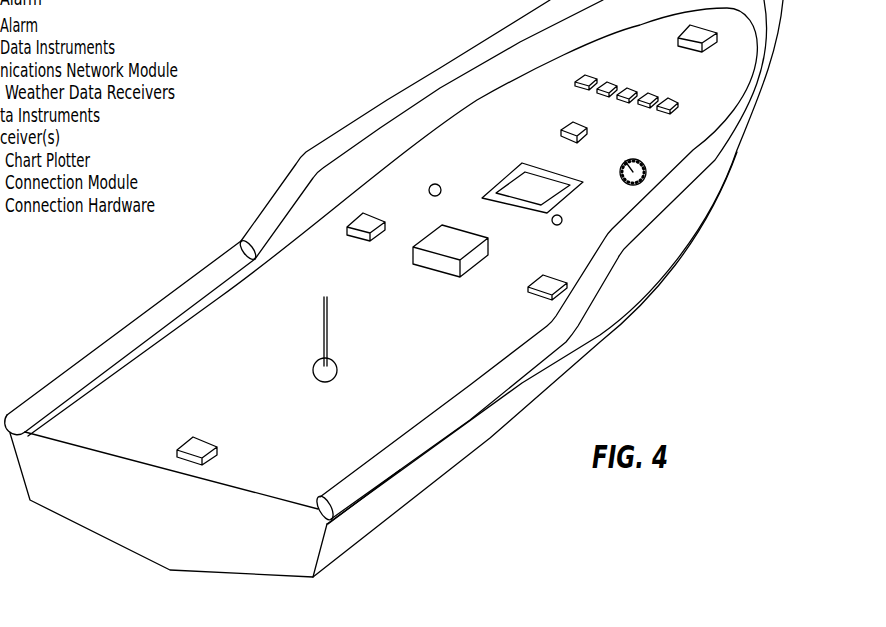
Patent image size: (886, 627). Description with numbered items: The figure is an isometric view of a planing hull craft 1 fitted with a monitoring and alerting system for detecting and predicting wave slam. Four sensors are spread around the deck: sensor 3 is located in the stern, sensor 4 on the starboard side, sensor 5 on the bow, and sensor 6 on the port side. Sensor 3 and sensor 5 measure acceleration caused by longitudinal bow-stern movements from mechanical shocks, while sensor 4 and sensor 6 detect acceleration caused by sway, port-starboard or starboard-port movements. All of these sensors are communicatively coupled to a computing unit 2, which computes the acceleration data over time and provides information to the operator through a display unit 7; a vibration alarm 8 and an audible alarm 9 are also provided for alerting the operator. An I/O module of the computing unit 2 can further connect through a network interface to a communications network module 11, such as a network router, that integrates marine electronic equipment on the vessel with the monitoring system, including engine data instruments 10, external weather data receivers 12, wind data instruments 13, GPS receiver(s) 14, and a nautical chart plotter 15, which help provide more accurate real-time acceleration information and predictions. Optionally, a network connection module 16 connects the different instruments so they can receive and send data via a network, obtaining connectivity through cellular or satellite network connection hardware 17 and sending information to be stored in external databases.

The planing hull craft 1 is at (685, 263).
The computing unit 2 is at (488, 247).
The sensor 3 is at (217, 447).
The sensor 4 is at (528, 290).
The sensor 5 is at (678, 42).
The sensor 6 is at (383, 217).
The display unit 7 is at (573, 175).
The vibration alarm 8 is at (439, 184).
The audible alarm 9 is at (561, 224).
The engine data instruments 10 is at (647, 165).
The communications network module 11 is at (561, 134).
The external weather data receivers 12 is at (575, 85).
The wind data instruments 13 is at (598, 96).
The GPS receiver(s) 14 is at (637, 90).
The nautical chart plotter 15 is at (640, 106).
The network connection module 16 is at (662, 114).
The network connection hardware 17 is at (337, 364).